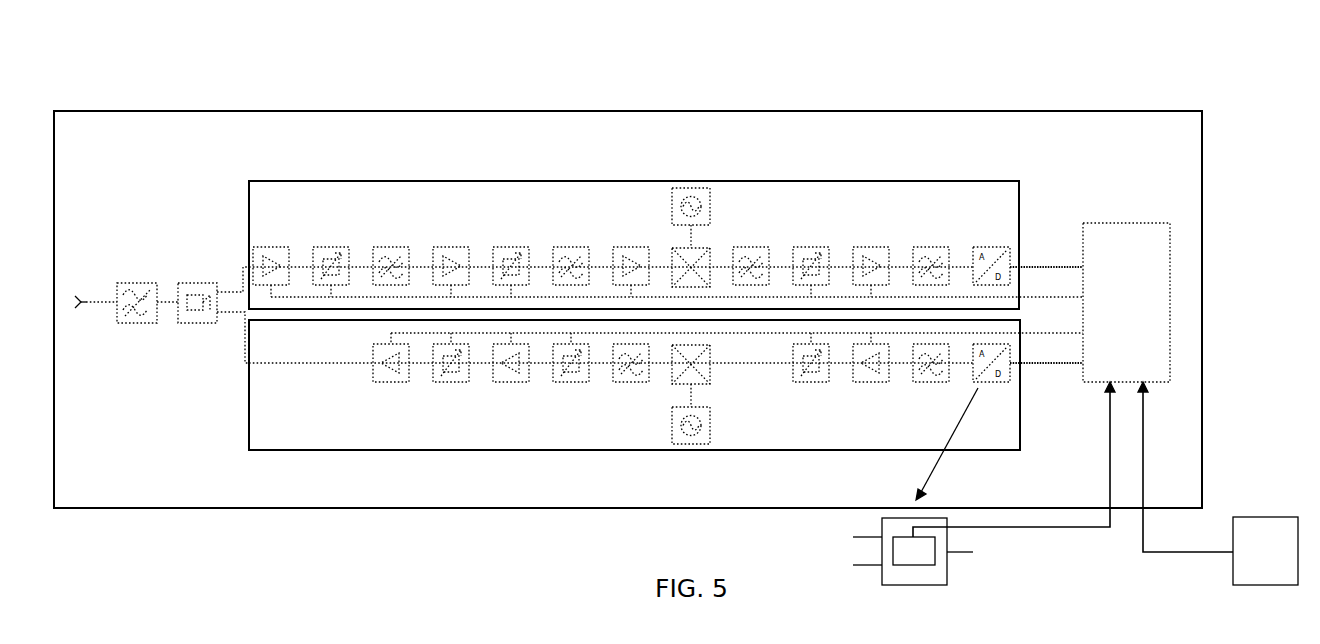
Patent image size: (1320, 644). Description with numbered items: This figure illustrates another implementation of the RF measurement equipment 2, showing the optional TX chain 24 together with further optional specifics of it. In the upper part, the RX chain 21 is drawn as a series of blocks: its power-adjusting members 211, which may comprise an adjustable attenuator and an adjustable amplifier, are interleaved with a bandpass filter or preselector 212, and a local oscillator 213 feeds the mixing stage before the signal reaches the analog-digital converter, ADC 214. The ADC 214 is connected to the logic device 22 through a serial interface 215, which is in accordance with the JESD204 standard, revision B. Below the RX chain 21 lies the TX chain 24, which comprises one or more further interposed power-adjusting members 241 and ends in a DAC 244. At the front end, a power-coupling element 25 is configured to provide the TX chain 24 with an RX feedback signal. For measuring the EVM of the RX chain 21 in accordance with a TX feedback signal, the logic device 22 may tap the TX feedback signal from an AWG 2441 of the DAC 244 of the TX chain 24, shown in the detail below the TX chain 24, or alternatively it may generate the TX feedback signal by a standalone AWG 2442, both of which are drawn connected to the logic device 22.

The RF measurement equipment 2 is at (671, 37).
The RX chain 21 is at (978, 181).
The logic device 22 is at (1143, 223).
The TX chain 24 is at (978, 451).
The power-coupling element 25 is at (195, 283).
The power-adjusting members 211 is at (333, 247).
The bandpass filter or preselector 212 is at (398, 247).
The local oscillator 213 is at (697, 188).
The analog-digital converter, ADC 214 is at (1003, 247).
The serial interface 215 is at (1080, 265).
The further interposed power-adjusting members 241 is at (397, 385).
The DAC 244 is at (1003, 385).
The AWG 2441 is at (935, 561).
The standalone AWG 2442 is at (1287, 559).